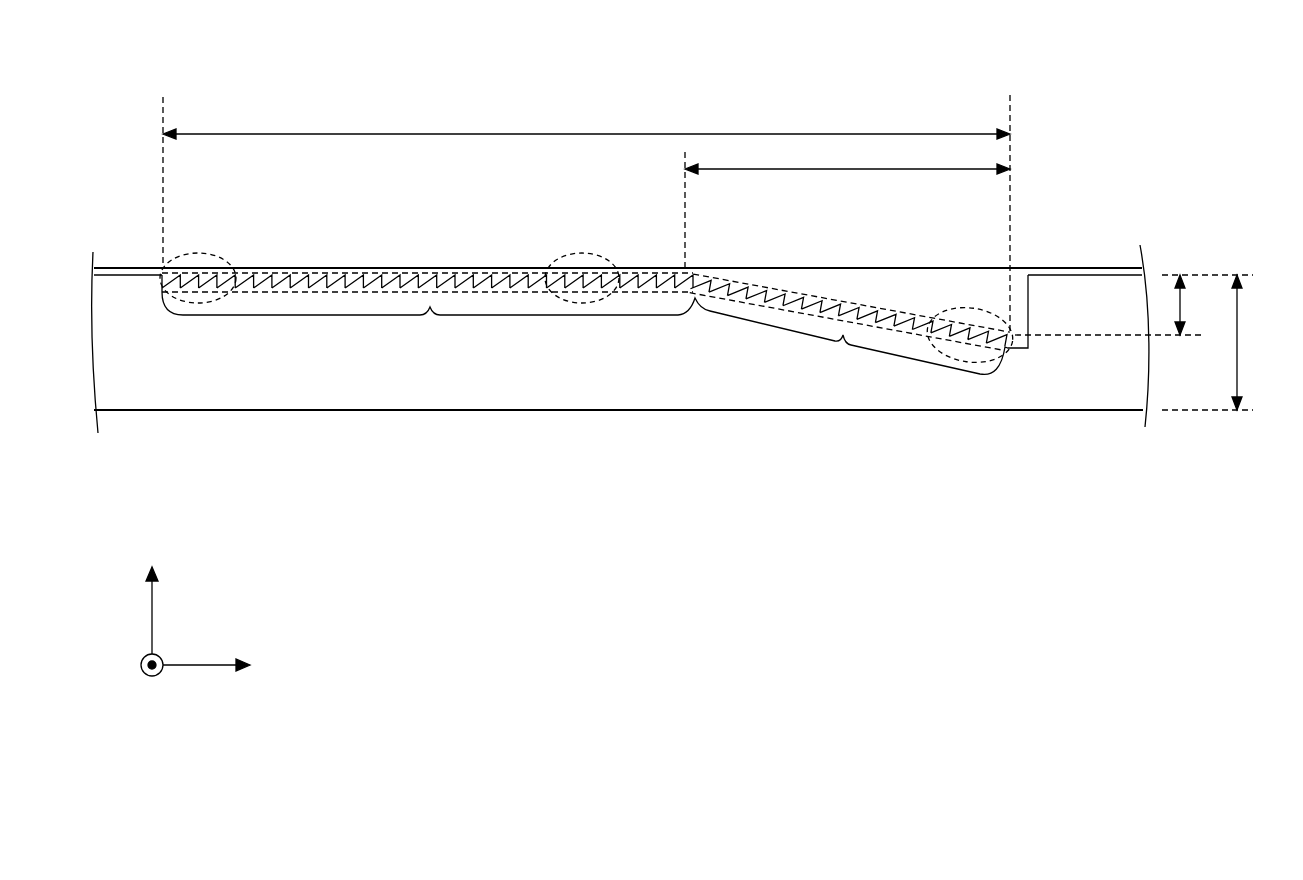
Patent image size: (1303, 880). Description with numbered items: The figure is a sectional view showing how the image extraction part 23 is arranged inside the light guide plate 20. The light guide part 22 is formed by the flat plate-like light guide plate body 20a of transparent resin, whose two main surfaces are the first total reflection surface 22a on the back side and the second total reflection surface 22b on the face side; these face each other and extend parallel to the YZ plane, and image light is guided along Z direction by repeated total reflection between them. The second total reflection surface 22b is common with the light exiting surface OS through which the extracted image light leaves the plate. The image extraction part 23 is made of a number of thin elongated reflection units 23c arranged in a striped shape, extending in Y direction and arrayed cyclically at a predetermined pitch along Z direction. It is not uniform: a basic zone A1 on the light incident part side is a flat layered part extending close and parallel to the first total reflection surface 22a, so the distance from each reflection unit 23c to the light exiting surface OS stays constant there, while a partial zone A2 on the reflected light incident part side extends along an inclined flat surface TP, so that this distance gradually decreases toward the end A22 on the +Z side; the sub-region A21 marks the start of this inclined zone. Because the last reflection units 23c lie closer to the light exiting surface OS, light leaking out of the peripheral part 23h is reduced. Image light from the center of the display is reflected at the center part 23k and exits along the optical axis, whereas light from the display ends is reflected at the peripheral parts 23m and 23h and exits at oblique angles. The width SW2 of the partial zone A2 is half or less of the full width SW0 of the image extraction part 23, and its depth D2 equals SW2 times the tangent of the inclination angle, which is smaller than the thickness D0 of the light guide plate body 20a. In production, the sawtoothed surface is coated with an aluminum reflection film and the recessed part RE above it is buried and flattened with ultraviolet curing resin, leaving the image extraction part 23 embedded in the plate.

The light guide plate 20 is at (1217, 57).
The light guide part 22 is at (505, 390).
The first total reflection surface 22a is at (120, 267).
The second total reflection surface 22b is at (160, 410).
The light guide plate body 20a is at (320, 400).
The light exiting surface OS is at (685, 410).
The image extraction part 23 is at (695, 434).
The reflection units 23c is at (397, 284).
The peripheral part 23m is at (198, 303).
The center part 23k is at (582, 303).
The peripheral part 23h is at (975, 363).
The basic zone A1 is at (430, 333).
The partial zone A2 is at (840, 347).
The first sub-region of second region A21 is at (713, 277).
The end A22 is at (1000, 327).
The inclined flat surface TP is at (843, 300).
The recessed part RE is at (893, 290).
The full width SW0 is at (586, 214).
The width SW2 is at (847, 203).
The depth D2 is at (1134, 305).
The thickness D0 is at (1221, 342).